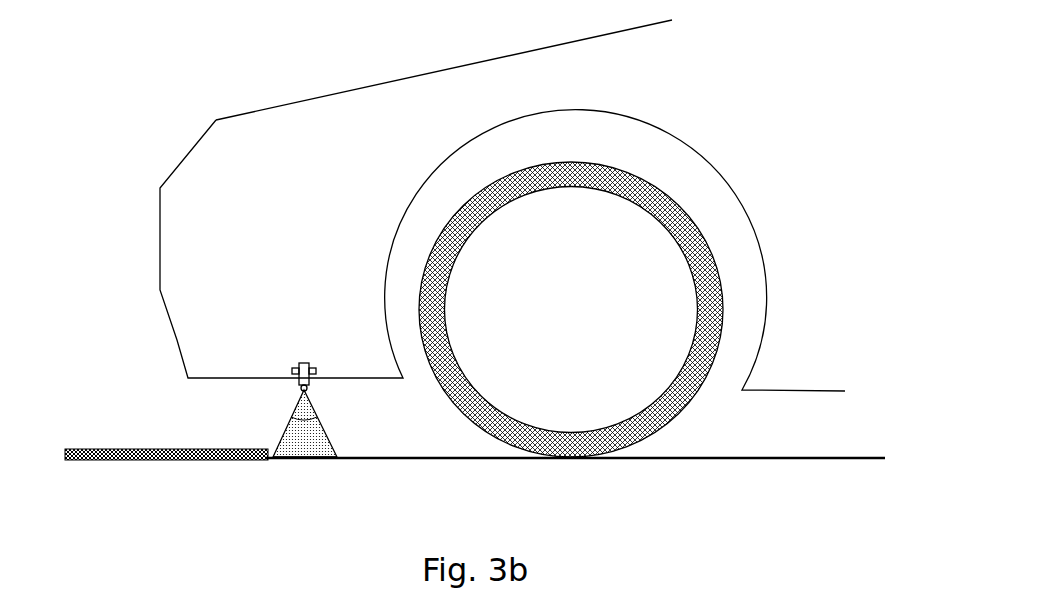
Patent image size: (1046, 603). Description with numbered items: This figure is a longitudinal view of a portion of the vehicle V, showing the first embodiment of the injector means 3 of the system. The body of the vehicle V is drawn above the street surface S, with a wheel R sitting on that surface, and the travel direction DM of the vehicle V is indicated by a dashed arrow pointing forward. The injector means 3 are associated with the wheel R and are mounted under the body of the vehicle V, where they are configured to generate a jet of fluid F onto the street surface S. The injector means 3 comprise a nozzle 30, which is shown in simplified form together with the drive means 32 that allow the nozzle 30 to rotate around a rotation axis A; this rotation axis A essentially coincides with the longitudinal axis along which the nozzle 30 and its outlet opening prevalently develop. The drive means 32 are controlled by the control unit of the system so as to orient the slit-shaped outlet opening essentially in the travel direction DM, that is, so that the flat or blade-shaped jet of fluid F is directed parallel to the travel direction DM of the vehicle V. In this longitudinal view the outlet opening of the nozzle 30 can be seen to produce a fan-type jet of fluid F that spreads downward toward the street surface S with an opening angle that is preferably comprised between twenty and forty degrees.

The vehicle V is at (205, 140).
The travel direction DM is at (82, 239).
The wheel R is at (641, 420).
The street surface S is at (780, 460).
The drive means 32 is at (293, 370).
The rotation axis A is at (304, 362).
The nozzle 30 is at (300, 386).
The jet of fluid F is at (323, 460).
The injector means 3 is at (319, 361).